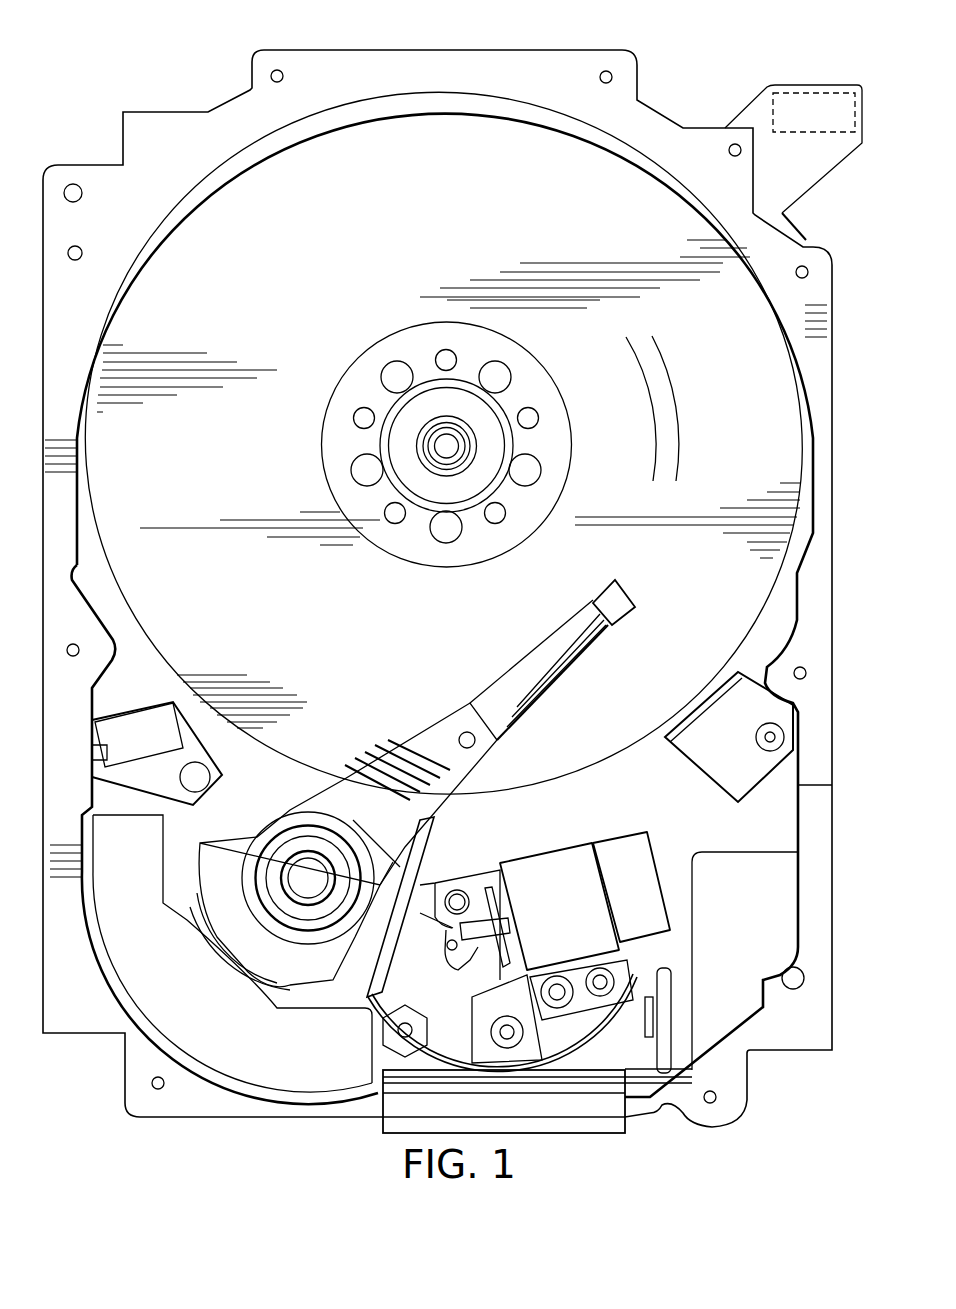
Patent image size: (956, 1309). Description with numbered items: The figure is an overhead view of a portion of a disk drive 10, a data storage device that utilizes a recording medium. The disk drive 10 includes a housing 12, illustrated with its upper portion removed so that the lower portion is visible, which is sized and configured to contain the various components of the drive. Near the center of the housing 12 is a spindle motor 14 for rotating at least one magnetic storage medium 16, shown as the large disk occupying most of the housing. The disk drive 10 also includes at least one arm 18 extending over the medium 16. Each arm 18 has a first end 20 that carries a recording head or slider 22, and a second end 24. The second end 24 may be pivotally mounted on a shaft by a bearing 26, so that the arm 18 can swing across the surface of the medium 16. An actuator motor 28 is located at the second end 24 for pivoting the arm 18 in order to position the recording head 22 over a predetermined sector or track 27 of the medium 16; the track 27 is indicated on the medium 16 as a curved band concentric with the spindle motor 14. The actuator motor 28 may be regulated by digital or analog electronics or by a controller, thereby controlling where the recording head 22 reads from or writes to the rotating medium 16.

The disk drive 10 is at (101, 97).
The housing 12 is at (587, 65).
The spindle motor 14 is at (438, 452).
The magnetic storage medium 16 is at (355, 233).
The arm 18 is at (430, 753).
The first end 20 is at (553, 635).
The recording head 22 is at (613, 600).
The second end 24 is at (335, 815).
The bearing 26 is at (300, 863).
The track 27 is at (668, 417).
The actuator motor 28 is at (195, 1006).